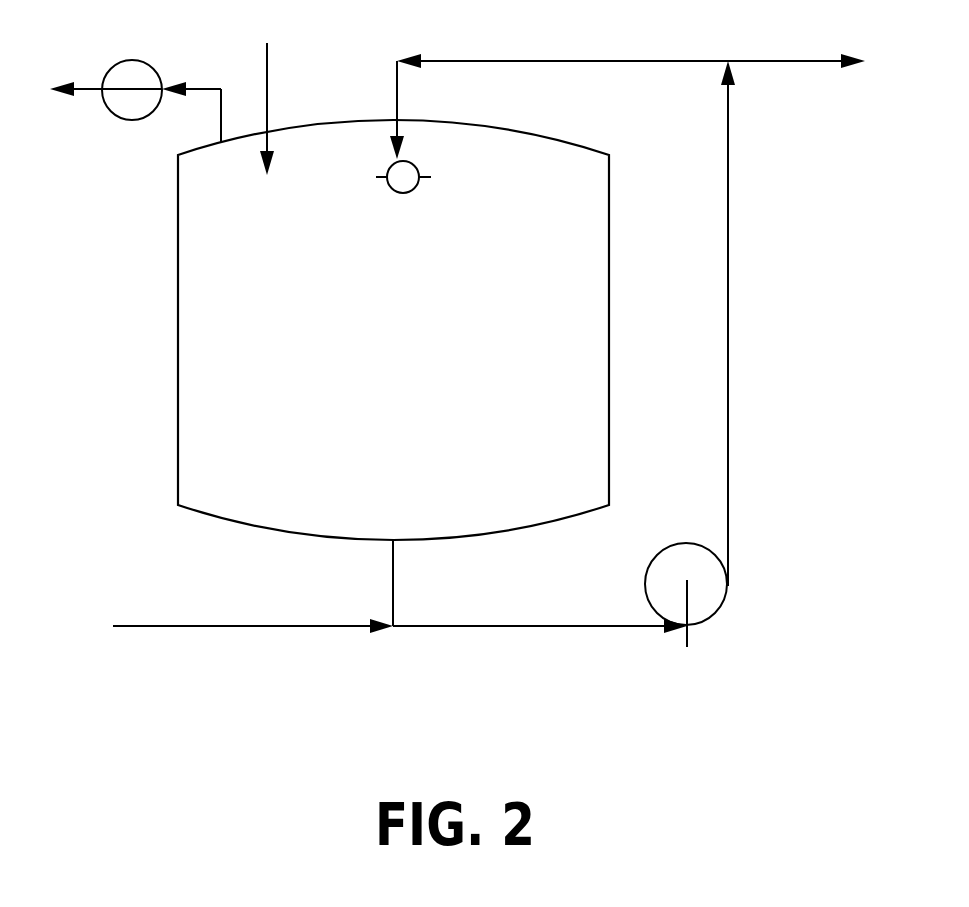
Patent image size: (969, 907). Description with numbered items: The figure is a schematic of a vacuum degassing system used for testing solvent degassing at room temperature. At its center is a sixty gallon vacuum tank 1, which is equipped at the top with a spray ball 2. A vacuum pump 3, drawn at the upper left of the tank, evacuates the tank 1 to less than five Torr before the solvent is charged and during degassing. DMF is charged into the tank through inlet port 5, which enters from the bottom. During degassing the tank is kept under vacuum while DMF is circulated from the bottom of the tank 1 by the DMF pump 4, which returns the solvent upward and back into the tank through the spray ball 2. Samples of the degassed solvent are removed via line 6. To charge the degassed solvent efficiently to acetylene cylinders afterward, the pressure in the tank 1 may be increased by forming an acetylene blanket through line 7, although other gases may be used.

The vacuum tank 1 is at (401, 342).
The spray ball 2 is at (403, 148).
The vacuum pump 3 is at (135, 112).
The DMF pump 4 is at (686, 595).
The inlet port 5 is at (387, 626).
The line 6 is at (646, 314).
The line 7 is at (267, 90).